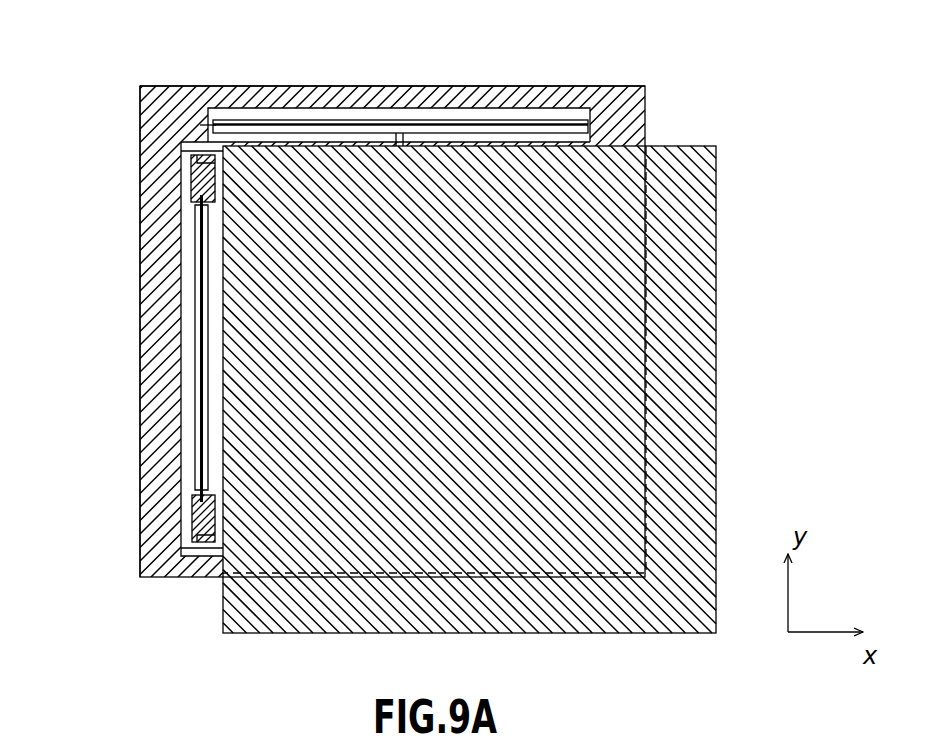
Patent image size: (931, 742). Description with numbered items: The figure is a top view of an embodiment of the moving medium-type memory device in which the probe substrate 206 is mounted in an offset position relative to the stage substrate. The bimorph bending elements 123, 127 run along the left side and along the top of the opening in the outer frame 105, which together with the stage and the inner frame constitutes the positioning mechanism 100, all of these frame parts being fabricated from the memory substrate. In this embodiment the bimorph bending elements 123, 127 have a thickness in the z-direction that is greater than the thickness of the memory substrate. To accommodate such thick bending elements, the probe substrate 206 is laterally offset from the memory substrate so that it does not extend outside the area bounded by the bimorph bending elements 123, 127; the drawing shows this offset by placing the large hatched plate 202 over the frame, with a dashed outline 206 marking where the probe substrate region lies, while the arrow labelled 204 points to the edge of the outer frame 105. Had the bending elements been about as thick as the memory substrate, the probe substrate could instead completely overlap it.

The positioning mechanism 100 is at (491, 84).
The outer frame 105 is at (152, 447).
The bimorph bending element 123 is at (204, 283).
The bimorph bending element 127 is at (538, 118).
The movable plate 202 is at (736, 189).
The base 204 is at (138, 388).
The probe substrate 206 is at (607, 367).